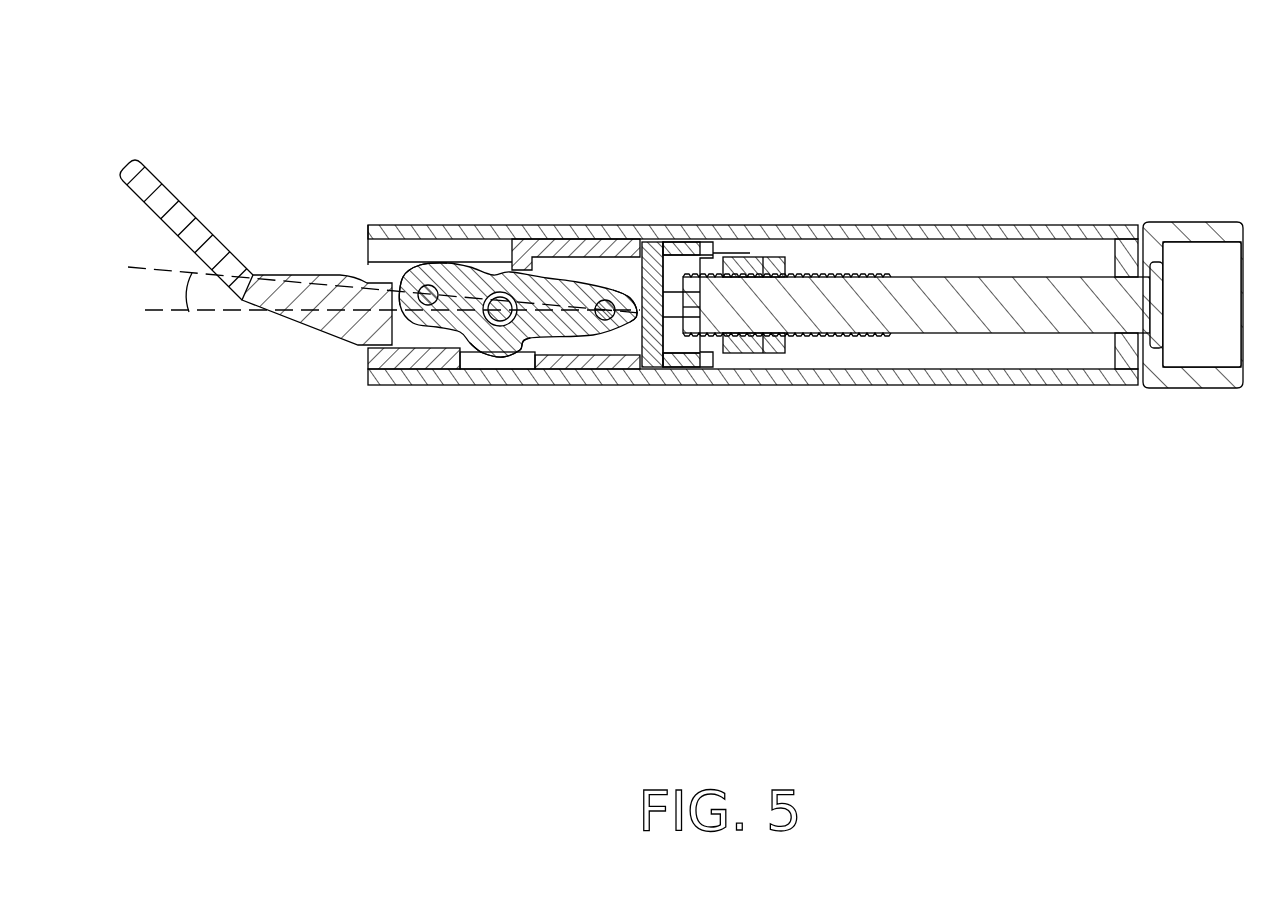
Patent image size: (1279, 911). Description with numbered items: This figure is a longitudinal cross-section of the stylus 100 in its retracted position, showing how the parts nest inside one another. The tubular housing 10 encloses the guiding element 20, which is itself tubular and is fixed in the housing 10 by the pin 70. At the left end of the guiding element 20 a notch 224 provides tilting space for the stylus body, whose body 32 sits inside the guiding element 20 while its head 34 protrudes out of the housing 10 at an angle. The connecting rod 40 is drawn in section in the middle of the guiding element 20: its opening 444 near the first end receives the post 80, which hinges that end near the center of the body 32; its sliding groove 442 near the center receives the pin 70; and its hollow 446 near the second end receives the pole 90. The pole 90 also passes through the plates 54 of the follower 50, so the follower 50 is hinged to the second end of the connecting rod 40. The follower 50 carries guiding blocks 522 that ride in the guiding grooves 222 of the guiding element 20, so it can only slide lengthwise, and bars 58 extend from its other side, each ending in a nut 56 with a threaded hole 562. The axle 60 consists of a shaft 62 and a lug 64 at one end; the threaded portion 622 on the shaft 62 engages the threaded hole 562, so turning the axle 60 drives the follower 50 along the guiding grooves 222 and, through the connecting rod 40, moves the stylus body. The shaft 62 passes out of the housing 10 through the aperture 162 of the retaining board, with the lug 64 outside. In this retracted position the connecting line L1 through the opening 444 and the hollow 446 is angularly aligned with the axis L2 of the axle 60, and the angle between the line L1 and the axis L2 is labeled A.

The stylus 100 is at (756, 53).
The housing 10 is at (995, 232).
The guiding element 20 is at (607, 385).
The guiding groove 222 is at (748, 253).
The notch 224 is at (380, 252).
The body 32 is at (333, 323).
The head 34 is at (172, 197).
The connecting rod 40 is at (542, 298).
The sliding groove 442 is at (498, 328).
The opening 444 is at (450, 290).
The hollow 446 is at (618, 298).
The pin 70 is at (500, 292).
The post 80 is at (420, 285).
The pole 90 is at (600, 292).
The plate 54 is at (624, 350).
The follower 50 is at (785, 262).
The guiding block 522 is at (665, 252).
The bar 58 is at (673, 310).
The shaft 62 is at (877, 302).
The threaded portion 622 is at (893, 338).
The nut 56 is at (793, 353).
The threaded hole 562 is at (818, 338).
The aperture 162 is at (1117, 262).
The axle 60 is at (1235, 395).
The lug 64 is at (1207, 232).
The connecting line L1 is at (367, 282).
The axis L2 is at (368, 311).
The angle A is at (175, 292).